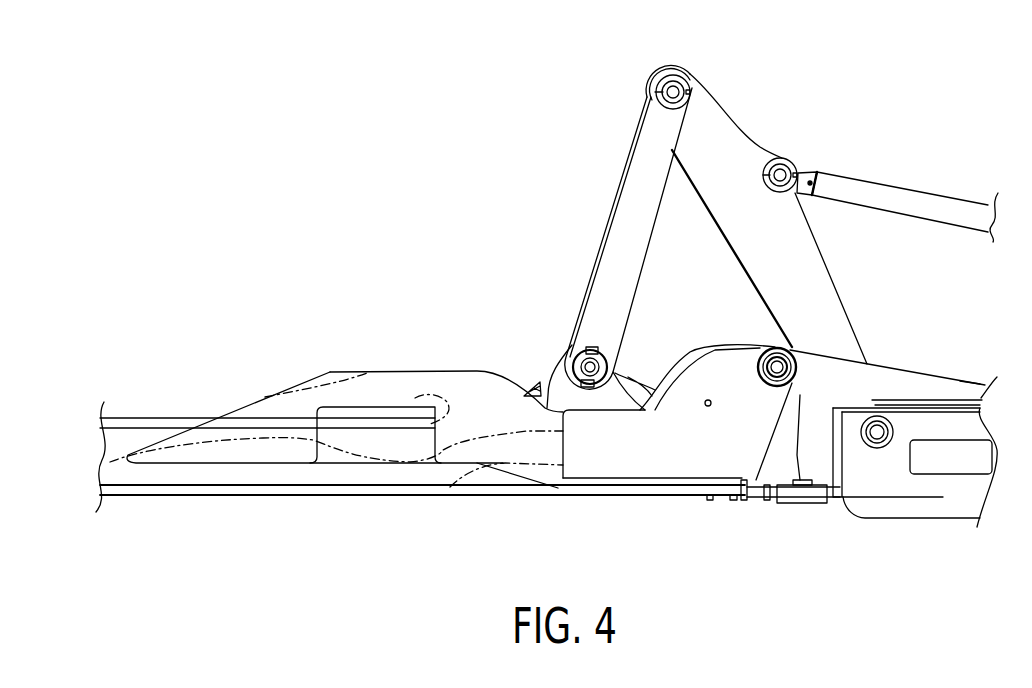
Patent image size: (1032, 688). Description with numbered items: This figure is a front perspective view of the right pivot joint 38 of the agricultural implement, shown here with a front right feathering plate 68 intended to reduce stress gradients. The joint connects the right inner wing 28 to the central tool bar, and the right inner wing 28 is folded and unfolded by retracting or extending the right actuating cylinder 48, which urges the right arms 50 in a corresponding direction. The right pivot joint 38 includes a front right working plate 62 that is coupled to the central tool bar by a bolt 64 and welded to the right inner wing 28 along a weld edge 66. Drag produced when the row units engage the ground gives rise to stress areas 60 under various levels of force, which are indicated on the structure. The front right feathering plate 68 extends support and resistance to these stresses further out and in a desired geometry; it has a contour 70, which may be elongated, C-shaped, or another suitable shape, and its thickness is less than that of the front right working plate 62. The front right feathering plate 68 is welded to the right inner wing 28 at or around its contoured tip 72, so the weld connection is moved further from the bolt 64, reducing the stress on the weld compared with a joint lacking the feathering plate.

The right inner wing 28 is at (122, 420).
The right pivot joint 38 is at (536, 190).
The right actuating cylinder 48 is at (905, 187).
The right arms 50 is at (668, 92).
The stress areas 60 is at (335, 370).
The front right working plate 62 is at (668, 472).
The bolt 64 is at (793, 345).
The weld edge 66 is at (545, 378).
The front right feathering plate 68 is at (557, 480).
The contour 70 is at (473, 370).
The contoured tip 72 is at (160, 443).